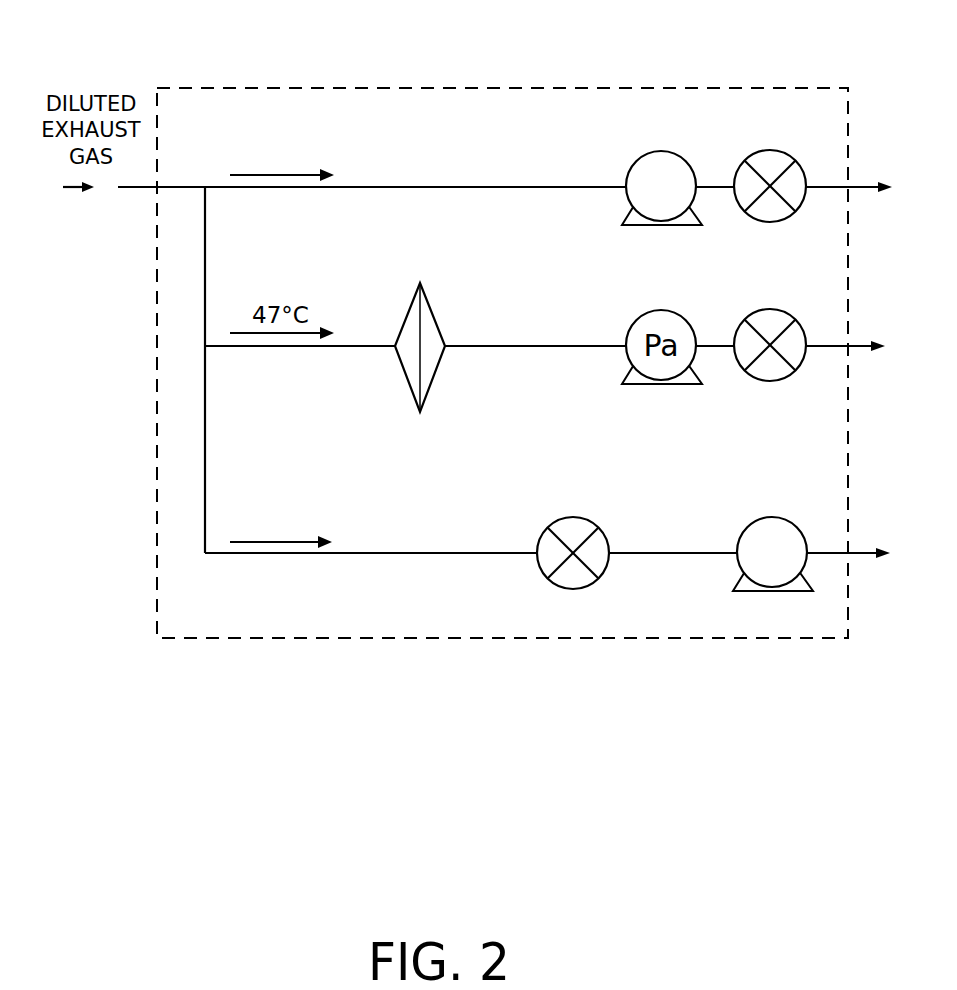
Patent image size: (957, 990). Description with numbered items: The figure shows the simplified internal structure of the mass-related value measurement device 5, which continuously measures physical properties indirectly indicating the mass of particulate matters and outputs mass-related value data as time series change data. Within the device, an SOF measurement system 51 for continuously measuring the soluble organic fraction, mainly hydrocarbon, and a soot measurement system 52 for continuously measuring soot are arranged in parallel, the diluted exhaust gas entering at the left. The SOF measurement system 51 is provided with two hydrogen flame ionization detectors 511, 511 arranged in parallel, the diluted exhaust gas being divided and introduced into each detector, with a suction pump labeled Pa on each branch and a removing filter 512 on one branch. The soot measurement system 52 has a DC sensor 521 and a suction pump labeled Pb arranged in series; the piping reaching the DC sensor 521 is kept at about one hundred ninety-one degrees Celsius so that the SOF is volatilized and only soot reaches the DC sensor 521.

The mass-related value measurement device 5 is at (537, 88).
The SOF measurement system 51 is at (472, 160).
The soot measurement system 52 is at (437, 516).
The hydrogen flame ionization detector 511 is at (747, 221).
The removing filter 512 is at (437, 322).
The DC sensor 521 is at (573, 517).